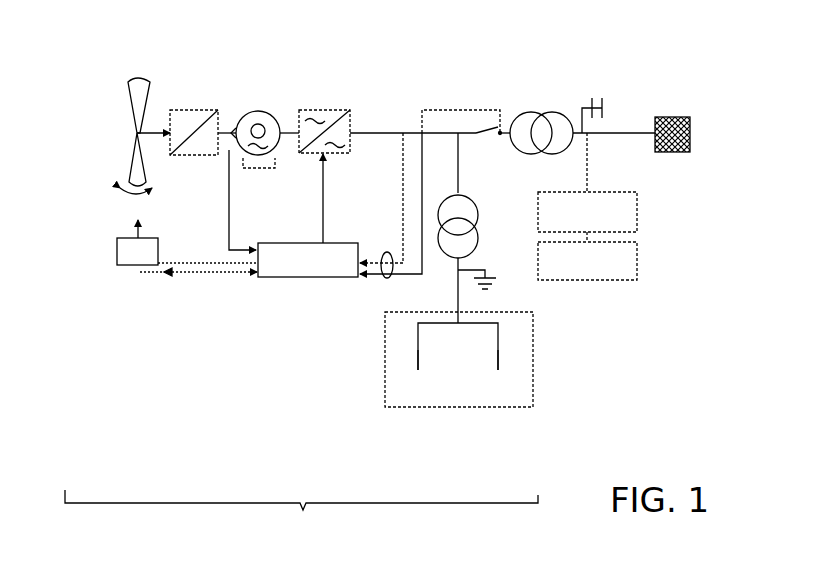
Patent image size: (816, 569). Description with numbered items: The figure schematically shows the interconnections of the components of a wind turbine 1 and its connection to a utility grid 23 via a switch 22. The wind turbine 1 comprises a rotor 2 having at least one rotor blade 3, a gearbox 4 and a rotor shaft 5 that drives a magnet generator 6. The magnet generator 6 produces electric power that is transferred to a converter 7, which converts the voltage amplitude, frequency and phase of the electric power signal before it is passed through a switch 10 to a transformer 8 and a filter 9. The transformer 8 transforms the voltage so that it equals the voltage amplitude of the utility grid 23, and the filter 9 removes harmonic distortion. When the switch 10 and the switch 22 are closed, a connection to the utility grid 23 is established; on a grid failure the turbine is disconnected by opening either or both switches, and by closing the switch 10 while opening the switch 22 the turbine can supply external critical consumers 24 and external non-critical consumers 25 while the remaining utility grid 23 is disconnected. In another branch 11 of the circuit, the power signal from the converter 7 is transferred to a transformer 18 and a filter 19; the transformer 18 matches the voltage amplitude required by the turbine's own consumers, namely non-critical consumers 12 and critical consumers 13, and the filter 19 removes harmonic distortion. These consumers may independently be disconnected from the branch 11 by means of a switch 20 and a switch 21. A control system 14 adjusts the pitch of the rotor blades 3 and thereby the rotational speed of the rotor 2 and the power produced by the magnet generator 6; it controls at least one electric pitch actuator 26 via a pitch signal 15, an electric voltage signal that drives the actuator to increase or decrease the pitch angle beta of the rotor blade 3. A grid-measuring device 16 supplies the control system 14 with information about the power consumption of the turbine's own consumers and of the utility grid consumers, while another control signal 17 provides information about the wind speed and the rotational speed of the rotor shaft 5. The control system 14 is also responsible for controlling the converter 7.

The wind turbine 1 is at (303, 512).
The rotor 2 is at (118, 117).
The rotor blade 3 is at (135, 80).
The gearbox 4 is at (197, 110).
The rotor shaft 5 is at (154, 130).
The magnet generator 6 is at (257, 117).
The converter 7 is at (326, 110).
The transformer 8 is at (524, 125).
The filter 9 is at (585, 98).
The switch 10 is at (476, 125).
The branch 11 is at (458, 152).
The non-critical consumers 12 is at (498, 372).
The critical consumers 13 is at (418, 372).
The control system 14 is at (288, 260).
The pitch signal 15 is at (181, 245).
The grid-measuring device 16 is at (383, 277).
The control signal 17 is at (175, 272).
The transformer 18 is at (470, 212).
The filter 19 is at (497, 270).
The switch 20 is at (498, 345).
The switch 21 is at (417, 343).
The switch 22 is at (618, 133).
The utility grid 23 is at (672, 118).
The external critical consumers 24 is at (640, 210).
The external non-critical consumers 25 is at (640, 263).
The electric pitch actuator 26 is at (120, 248).